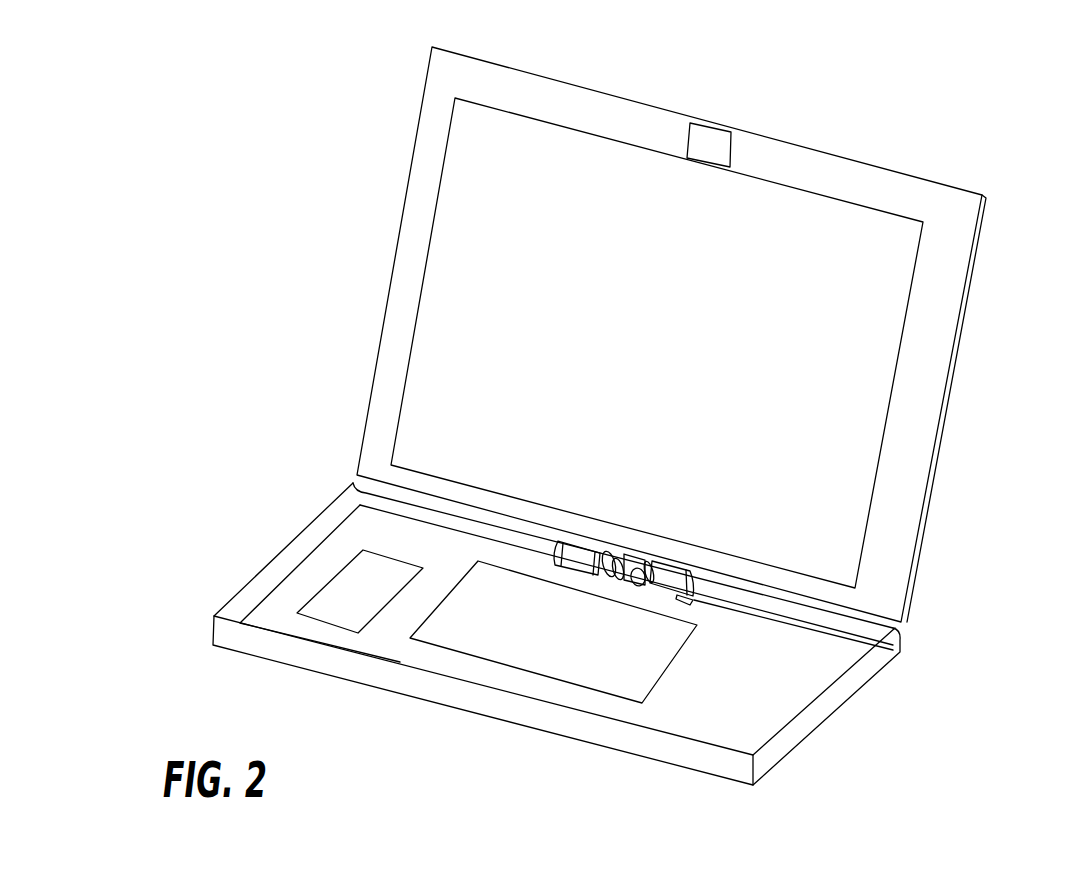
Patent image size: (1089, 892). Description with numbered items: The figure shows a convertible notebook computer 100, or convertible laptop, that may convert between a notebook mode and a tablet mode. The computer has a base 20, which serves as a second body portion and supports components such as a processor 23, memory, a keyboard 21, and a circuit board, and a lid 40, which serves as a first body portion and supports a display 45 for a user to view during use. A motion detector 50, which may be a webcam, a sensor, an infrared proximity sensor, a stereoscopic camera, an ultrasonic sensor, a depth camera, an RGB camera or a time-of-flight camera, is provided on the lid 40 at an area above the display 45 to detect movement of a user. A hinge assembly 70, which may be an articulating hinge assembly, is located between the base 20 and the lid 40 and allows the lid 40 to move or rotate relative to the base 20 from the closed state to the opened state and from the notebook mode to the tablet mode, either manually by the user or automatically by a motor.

The convertible notebook computer 100 is at (234, 158).
The base 20 is at (825, 703).
The keyboard 21 is at (447, 635).
The processor 23 is at (342, 613).
The lid 40 is at (980, 258).
The display 45 is at (775, 192).
The motion detector 50 is at (713, 138).
The hinge assembly 70 is at (870, 647).